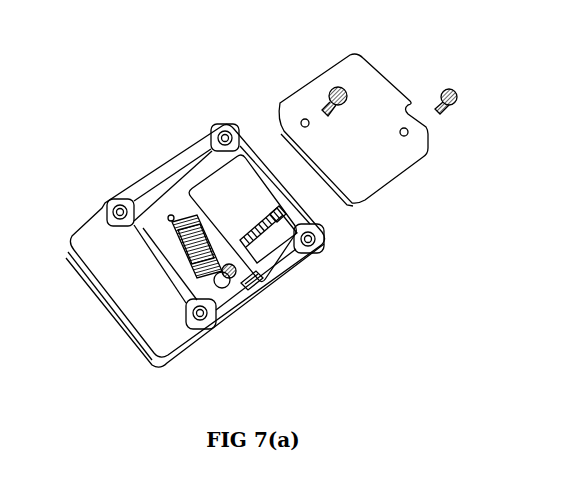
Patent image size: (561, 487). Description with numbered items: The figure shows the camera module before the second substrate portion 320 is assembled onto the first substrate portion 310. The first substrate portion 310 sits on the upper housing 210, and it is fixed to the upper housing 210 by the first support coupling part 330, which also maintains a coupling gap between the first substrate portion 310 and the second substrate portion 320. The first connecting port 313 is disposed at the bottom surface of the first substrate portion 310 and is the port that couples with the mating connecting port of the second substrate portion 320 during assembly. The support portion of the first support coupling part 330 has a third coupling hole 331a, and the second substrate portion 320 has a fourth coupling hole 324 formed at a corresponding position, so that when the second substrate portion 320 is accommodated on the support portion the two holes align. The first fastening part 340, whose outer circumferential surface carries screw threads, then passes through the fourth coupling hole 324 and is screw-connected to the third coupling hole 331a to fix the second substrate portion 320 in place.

The upper housing 210 is at (82, 235).
The first substrate portion 310 is at (147, 212).
The first connecting port 313 is at (192, 220).
The second substrate portion 320 is at (358, 73).
The fourth coupling hole 324 is at (410, 133).
The first support coupling part 330 is at (250, 288).
The third coupling hole 331a is at (286, 298).
The first fastening part 340 is at (458, 92).